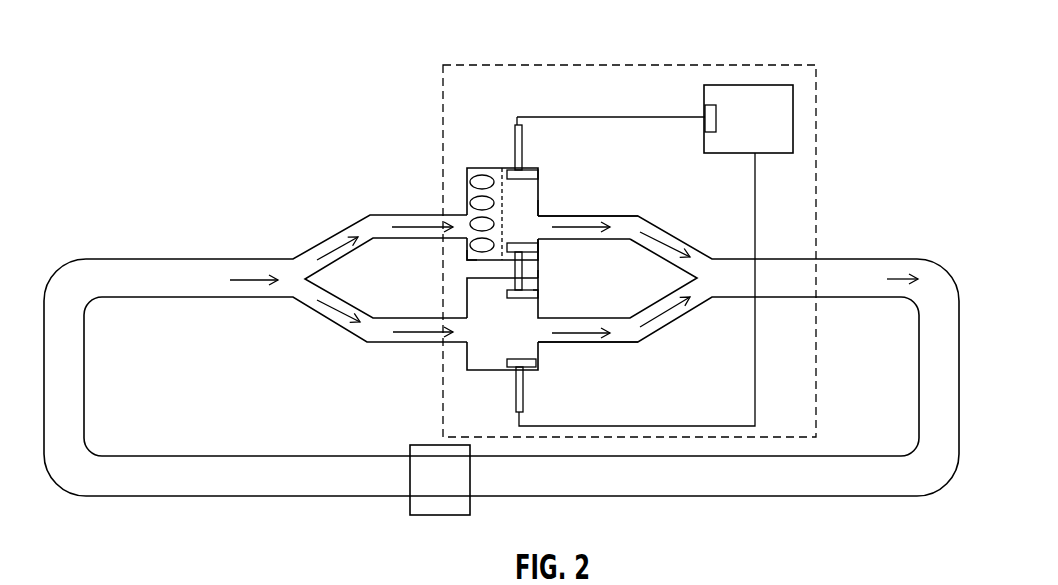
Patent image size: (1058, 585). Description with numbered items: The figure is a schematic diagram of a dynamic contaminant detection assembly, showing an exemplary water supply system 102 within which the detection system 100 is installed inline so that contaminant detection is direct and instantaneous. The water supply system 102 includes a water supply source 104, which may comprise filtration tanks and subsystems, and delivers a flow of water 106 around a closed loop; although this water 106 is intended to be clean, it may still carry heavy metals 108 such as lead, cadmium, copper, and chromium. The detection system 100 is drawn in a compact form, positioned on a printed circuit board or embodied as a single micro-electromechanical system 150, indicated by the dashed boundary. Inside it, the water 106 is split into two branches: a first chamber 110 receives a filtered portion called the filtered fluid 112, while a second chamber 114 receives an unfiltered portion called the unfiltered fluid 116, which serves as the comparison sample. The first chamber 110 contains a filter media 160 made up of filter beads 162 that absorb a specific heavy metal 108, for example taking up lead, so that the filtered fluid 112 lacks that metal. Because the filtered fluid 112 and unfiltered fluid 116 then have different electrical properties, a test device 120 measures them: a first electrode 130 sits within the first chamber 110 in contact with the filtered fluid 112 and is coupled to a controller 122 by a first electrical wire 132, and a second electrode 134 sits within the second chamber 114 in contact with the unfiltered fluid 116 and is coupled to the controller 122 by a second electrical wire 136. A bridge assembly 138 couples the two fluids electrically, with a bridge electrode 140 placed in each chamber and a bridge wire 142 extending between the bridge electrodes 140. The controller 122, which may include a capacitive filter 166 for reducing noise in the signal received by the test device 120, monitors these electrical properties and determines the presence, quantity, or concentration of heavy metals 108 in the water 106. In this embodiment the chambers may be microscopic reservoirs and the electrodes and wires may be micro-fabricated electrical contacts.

The detection system 100 is at (404, 156).
The water supply system 102 is at (260, 116).
The water supply source 104 is at (456, 489).
The water 106 is at (256, 277).
The heavy metals 108 is at (478, 176).
The first chamber 110 is at (540, 195).
The filtered fluid 112 is at (522, 228).
The second chamber 114 is at (539, 312).
The unfiltered fluid 116 is at (538, 344).
The test device 120 is at (618, 114).
The controller 122 is at (775, 138).
The first electrode 130 is at (540, 174).
The first electrical wire 132 is at (660, 117).
The second electrode 134 is at (538, 367).
The second electrical wire 136 is at (700, 426).
The bridge assembly 138 is at (506, 285).
The bridge electrode 140 is at (538, 278).
The bridge wire 142 is at (538, 296).
The micro-electromechanical system (MEMS) 150 is at (816, 157).
The filter media 160 is at (462, 256).
The filter beads 162 is at (470, 203).
The capacitive filter 166 is at (717, 117).